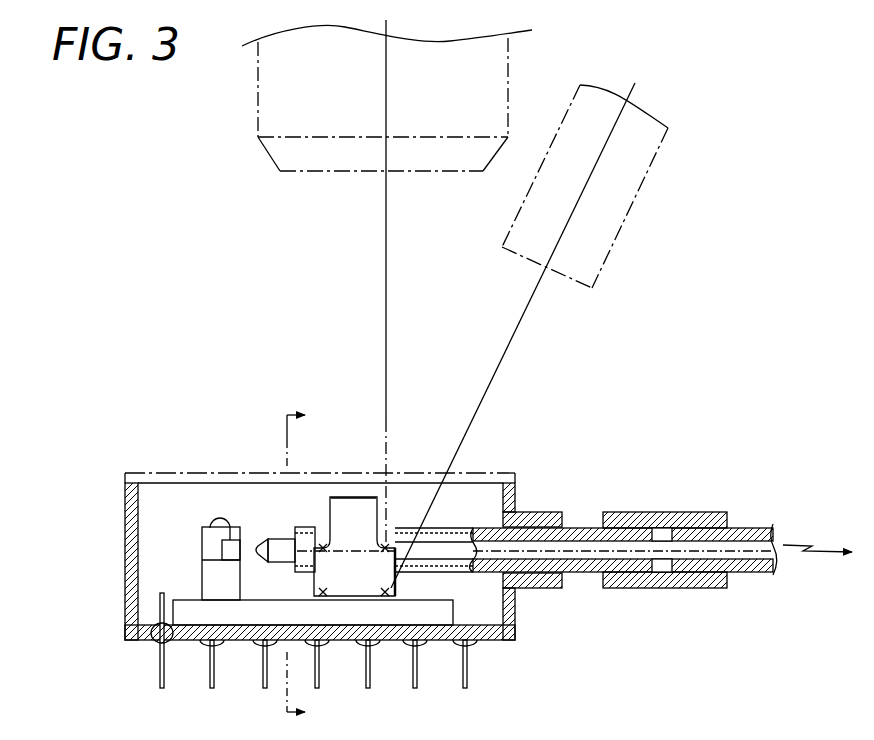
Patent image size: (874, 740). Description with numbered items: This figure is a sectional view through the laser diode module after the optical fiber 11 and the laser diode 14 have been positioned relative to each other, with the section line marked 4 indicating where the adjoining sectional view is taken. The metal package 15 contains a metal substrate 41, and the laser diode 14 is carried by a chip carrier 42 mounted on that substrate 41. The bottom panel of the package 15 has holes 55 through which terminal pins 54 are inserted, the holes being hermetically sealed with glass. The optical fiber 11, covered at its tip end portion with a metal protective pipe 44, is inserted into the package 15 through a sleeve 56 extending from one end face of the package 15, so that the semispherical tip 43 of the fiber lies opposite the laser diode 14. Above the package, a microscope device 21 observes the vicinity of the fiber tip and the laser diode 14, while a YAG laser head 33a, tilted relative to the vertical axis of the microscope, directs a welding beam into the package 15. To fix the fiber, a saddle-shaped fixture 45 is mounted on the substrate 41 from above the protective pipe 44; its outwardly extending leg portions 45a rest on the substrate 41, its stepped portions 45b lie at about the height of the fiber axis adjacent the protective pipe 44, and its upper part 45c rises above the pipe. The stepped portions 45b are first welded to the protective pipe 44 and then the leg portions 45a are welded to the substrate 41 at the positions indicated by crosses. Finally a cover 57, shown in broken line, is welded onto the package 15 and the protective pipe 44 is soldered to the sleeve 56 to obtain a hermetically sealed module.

The microscope device 21 is at (258, 75).
The YAG laser head 33a is at (640, 188).
The cover 57 is at (173, 472).
The section line IV-IV 4 is at (305, 564).
The package 15 is at (515, 622).
The metal substrate 41 is at (427, 622).
The terminal pins 54 is at (160, 690).
The holes 55 is at (152, 647).
The chip carrier 42 is at (216, 583).
The laser diode 14 is at (235, 553).
The semispherical tip 43 is at (263, 548).
The optical fiber 11 is at (287, 539).
The fixture 45 is at (360, 558).
The leg portions 45a is at (338, 587).
The stepped portions 45b is at (389, 545).
The holder block upper part 45c is at (341, 497).
The sleeve 56 is at (535, 512).
The protective pipe 44 is at (581, 528).